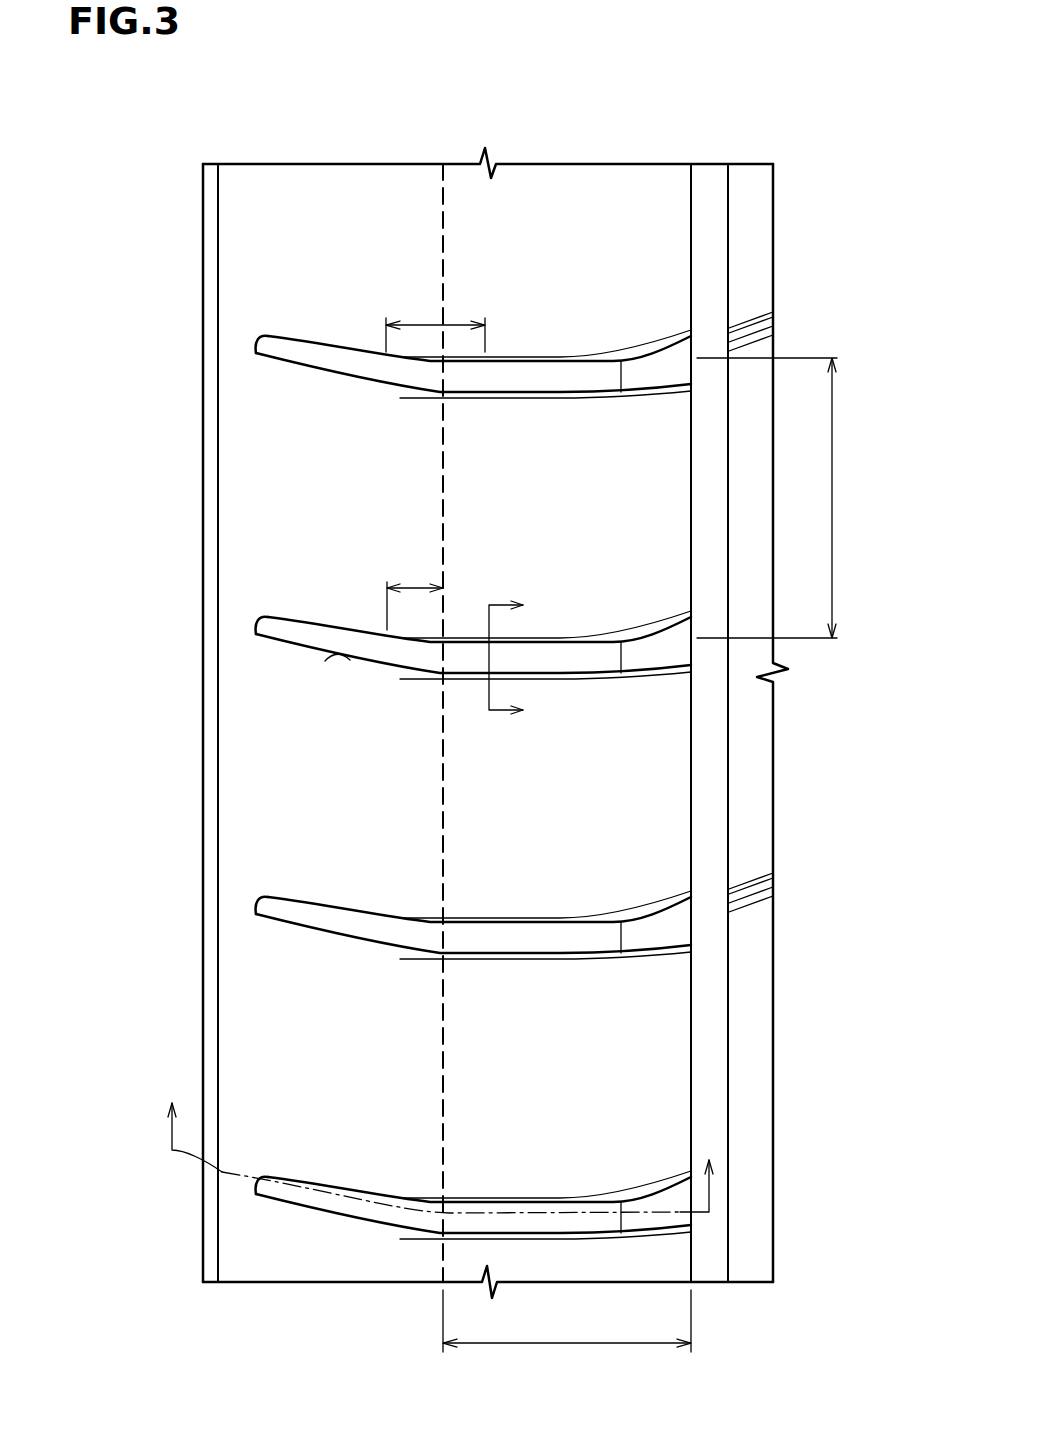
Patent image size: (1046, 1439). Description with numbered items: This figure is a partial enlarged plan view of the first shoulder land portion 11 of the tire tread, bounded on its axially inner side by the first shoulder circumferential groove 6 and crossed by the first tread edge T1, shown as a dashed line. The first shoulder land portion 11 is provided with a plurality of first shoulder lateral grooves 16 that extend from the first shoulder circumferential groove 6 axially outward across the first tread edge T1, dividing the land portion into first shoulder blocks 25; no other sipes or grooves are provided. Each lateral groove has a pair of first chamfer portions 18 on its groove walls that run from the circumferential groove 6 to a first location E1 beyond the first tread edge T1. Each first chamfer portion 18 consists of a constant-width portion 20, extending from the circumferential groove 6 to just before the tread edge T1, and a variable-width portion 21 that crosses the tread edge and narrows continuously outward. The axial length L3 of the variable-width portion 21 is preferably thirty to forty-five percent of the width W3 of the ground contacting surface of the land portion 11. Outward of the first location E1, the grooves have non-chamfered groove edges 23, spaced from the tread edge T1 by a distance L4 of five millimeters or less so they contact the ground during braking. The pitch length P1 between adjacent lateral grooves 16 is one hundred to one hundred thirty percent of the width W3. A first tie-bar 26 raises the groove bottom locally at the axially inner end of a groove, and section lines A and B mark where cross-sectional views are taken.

The first shoulder circumferential groove 6 is at (710, 212).
The first shoulder land portion 11 is at (543, 208).
The first shoulder lateral groove 16 is at (577, 382).
The first chamfer portion 18 is at (557, 922).
The constant-width portion 20 is at (552, 360).
The variable-width portion 21 is at (435, 361).
The non-chamfered groove edge 23 is at (317, 630).
The first shoulder block 25 is at (518, 818).
The first tie-bar 26 is at (665, 1217).
The first tread edge T1 is at (442, 195).
The length of the variable-width portion L3 is at (432, 328).
The distance from the first tread edge to the non-chamfered groove edges L4 is at (413, 587).
The pitch length P1 is at (787, 498).
The width of the ground contacting surface of the first shoulder land portion W3 is at (567, 1335).
The first location E1 is at (390, 670).
The section line A- A is at (521, 661).
The section line B- B is at (439, 1142).